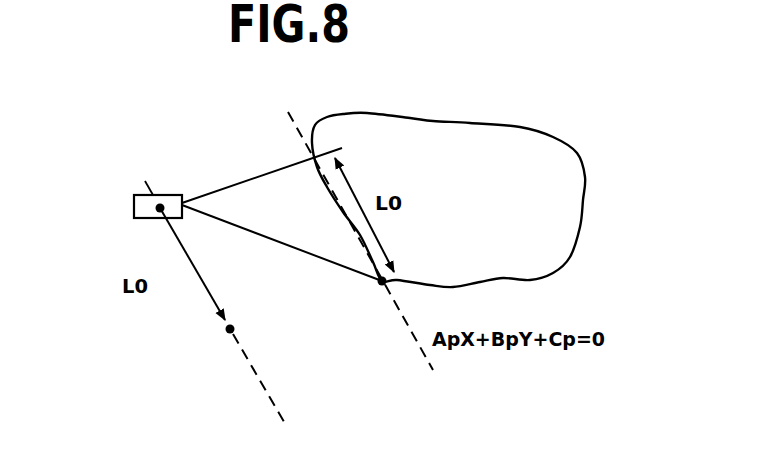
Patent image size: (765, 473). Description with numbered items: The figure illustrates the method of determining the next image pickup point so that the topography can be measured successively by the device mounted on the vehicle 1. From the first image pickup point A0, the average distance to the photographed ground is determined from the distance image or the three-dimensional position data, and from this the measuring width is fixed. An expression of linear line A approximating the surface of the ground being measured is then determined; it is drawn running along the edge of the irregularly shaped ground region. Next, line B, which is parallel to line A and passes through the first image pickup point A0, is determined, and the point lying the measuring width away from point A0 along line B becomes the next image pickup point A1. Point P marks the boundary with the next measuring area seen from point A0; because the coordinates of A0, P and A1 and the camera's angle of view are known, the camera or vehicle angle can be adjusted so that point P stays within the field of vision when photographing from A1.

The vehicle 1 is at (157, 219).
The first image pickup point A0 is at (138, 195).
The next image pickup point A1 is at (176, 349).
The boundary point P is at (340, 295).
The linear line A is at (339, 228).
The line B is at (284, 397).